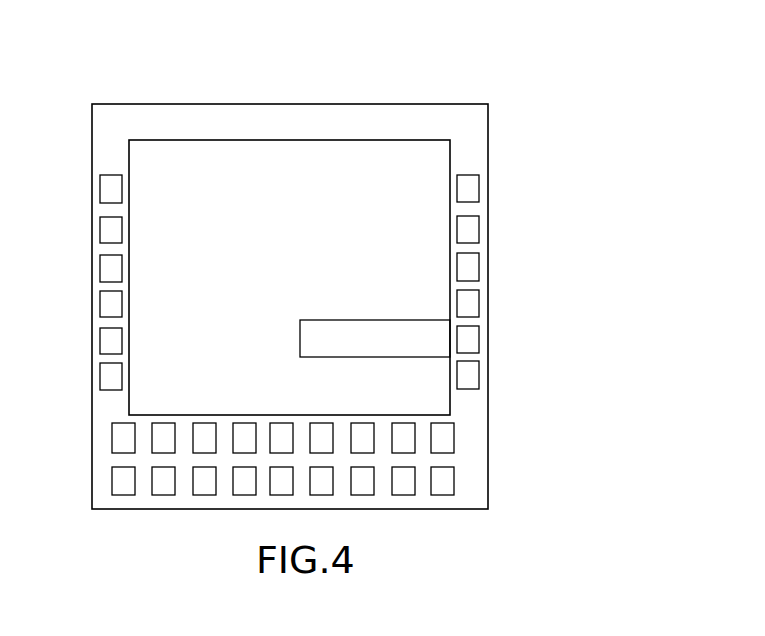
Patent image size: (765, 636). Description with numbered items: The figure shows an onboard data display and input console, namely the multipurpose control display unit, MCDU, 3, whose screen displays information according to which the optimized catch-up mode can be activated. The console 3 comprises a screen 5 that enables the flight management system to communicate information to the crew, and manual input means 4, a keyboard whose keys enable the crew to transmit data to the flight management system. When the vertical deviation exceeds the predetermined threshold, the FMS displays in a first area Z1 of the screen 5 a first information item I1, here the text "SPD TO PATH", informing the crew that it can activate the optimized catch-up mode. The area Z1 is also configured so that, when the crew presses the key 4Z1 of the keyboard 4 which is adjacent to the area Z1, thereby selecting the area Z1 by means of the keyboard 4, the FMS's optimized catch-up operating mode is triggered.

The multipurpose control display unit (MCDU) 3 is at (237, 103).
The manual input means 4 is at (108, 190).
The screen 5 is at (325, 140).
The first area Z1 is at (345, 320).
The first information item I1 is at (330, 347).
The key 4Z1 is at (473, 341).